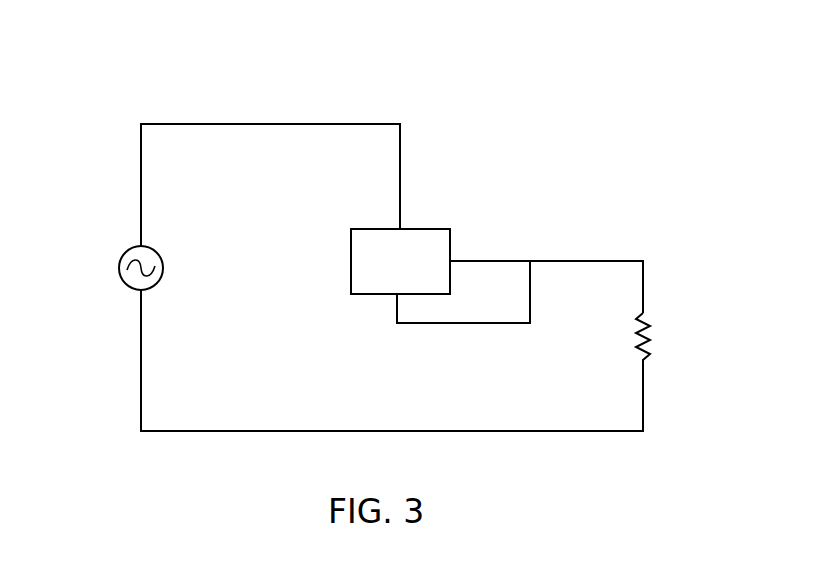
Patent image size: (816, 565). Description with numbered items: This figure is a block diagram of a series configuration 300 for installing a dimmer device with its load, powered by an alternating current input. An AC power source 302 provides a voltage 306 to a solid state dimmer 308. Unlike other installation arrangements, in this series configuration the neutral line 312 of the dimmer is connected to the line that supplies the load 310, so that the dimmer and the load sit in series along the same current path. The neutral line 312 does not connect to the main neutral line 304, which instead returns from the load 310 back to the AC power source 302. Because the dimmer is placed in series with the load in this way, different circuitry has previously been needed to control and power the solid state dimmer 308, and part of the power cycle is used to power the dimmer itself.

The series configuration 300 is at (584, 55).
The AC power source 302 is at (128, 288).
The main neutral line 304 is at (141, 427).
The voltage 306 is at (141, 134).
The solid state dimmer 308 is at (451, 231).
The load 310 is at (648, 319).
The neutral line 312 is at (397, 325).